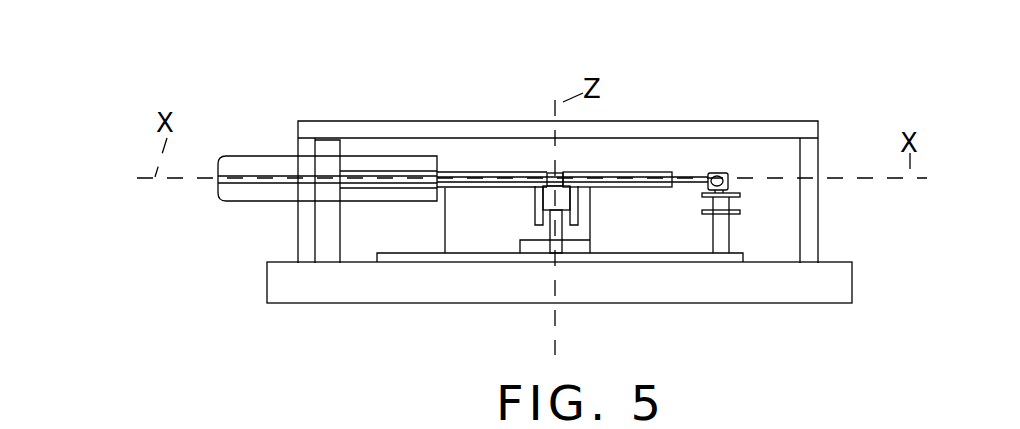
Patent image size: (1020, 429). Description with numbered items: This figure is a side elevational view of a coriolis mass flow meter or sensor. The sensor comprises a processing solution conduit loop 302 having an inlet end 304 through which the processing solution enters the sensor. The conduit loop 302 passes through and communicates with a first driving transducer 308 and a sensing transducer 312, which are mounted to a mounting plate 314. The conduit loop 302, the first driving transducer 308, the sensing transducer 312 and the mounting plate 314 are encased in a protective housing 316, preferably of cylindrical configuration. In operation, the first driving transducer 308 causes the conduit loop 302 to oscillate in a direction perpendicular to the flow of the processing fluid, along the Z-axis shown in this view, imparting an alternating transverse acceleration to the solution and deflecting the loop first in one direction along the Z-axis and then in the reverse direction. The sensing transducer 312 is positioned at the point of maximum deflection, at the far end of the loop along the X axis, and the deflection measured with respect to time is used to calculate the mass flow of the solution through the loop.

The processing solution conduit loop 302 is at (687, 185).
The inlet end 304 is at (230, 178).
The first driving transducer 308 is at (563, 173).
The sensing transducer 312 is at (727, 181).
The mounting plate 314 is at (743, 256).
The protective housing 316 is at (818, 148).